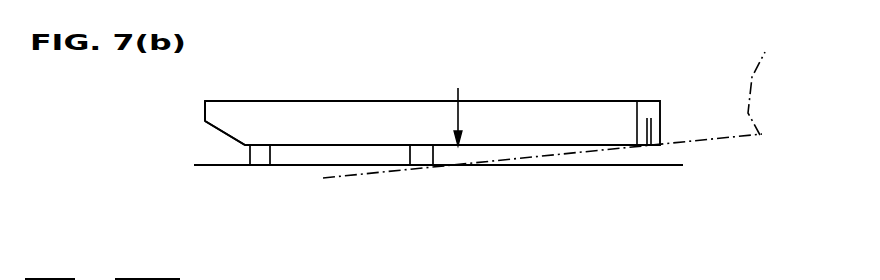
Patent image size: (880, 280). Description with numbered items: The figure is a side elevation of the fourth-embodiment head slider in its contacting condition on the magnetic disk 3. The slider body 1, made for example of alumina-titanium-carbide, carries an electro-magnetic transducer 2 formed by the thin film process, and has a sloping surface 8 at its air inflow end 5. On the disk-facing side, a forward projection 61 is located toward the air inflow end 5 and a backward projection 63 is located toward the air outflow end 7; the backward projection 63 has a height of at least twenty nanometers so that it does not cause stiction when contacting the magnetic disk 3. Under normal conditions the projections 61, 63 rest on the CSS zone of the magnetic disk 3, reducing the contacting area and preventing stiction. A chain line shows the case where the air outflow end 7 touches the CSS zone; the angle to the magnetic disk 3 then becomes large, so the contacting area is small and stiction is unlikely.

The slider body 1 is at (520, 108).
The electro-magnetic transducer 2 is at (652, 146).
The magnetic disk 3 is at (204, 168).
The air inflow end 5 is at (206, 113).
The air outflow end 7 is at (661, 110).
The sloping surface 8 is at (222, 132).
The forward projection 61 is at (261, 157).
The backward projection 63 is at (427, 158).